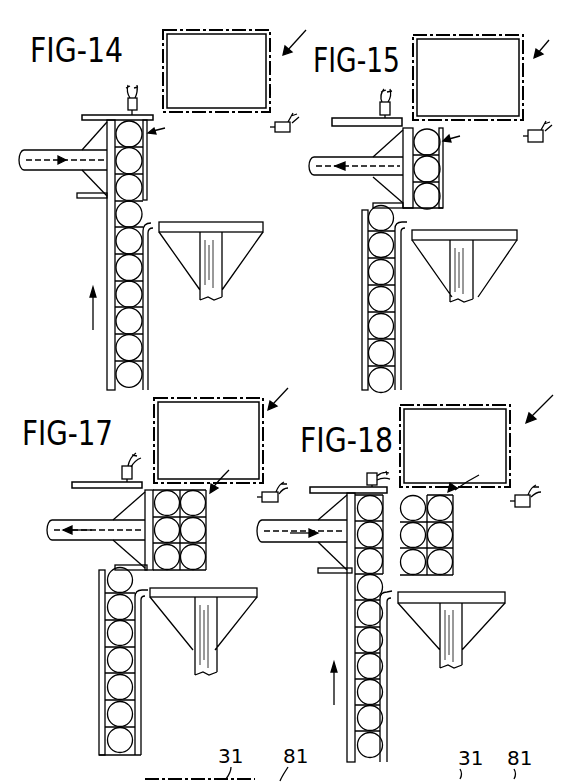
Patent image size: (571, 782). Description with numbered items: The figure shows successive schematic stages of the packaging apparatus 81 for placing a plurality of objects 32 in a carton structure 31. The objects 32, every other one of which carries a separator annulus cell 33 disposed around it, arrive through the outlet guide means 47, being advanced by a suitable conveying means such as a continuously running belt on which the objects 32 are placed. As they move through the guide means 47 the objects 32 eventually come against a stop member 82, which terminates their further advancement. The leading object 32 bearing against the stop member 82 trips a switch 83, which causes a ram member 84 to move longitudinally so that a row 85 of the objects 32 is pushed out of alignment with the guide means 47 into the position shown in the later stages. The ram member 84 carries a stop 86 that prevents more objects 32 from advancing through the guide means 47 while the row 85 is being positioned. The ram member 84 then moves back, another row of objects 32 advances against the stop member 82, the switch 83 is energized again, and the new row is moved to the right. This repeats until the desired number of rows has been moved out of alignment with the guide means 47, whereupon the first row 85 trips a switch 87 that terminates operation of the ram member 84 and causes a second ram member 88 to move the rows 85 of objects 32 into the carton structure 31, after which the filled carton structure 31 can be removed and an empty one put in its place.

In FIG. 14, the carton structure 31 is at (243, 30).
In FIG. 15, the carton structure 31 is at (498, 35).
In FIG. 17, the carton structure 31 is at (217, 398).
In FIG. 18, the carton structure 31 is at (492, 405).
In FIG. 14, the objects 32 is at (133, 163).
In FIG. 15, the objects 32 is at (432, 170).
In FIG. 17, the objects 32 is at (167, 559).
In FIG. 18, the objects 32 is at (442, 539).
In FIG. 14, the separator annulus cell 33 is at (149, 200).
In FIG. 15, the separator annulus cell 33 is at (443, 187).
In FIG. 17, the separator annulus cell 33 is at (206, 524).
In FIG. 18, the separator annulus cell 33 is at (453, 576).
In FIG. 14, the outlet guide means 47 is at (144, 354).
In FIG. 15, the outlet guide means 47 is at (398, 357).
In FIG. 17, the outlet guide means 47 is at (138, 725).
In FIG. 18, the outlet guide means 47 is at (385, 728).
In FIG. 14, the packaging apparatus 81 is at (303, 31).
In FIG. 15, the packaging apparatus 81 is at (550, 36).
In FIG. 17, the packaging apparatus 81 is at (282, 392).
In FIG. 18, the packaging apparatus 81 is at (548, 398).
In FIG. 14, the stop member 82 is at (82, 114).
In FIG. 15, the stop member 82 is at (352, 118).
In FIG. 17, the stop member 82 is at (80, 482).
In FIG. 18, the stop member 82 is at (313, 487).
In FIG. 14, the switch 83 is at (137, 101).
In FIG. 15, the switch 83 is at (390, 110).
In FIG. 17, the switch 83 is at (132, 471).
In FIG. 18, the switch 83 is at (367, 480).
In FIG. 14, the ram member 84 is at (40, 150).
In FIG. 15, the ram member 84 is at (336, 161).
In FIG. 17, the ram member 84 is at (83, 525).
In FIG. 18, the ram member 84 is at (294, 527).
In FIG. 14, the row 85 is at (169, 131).
In FIG. 15, the row 85 is at (463, 139).
In FIG. 17, the row 85 is at (228, 471).
In FIG. 18, the row 85 is at (473, 473).
In FIG. 14, the stop 86 is at (82, 199).
In FIG. 15, the stop 86 is at (373, 205).
In FIG. 17, the stop 86 is at (112, 566).
In FIG. 18, the stop 86 is at (318, 569).
In FIG. 14, the switch 87 is at (284, 137).
In FIG. 15, the switch 87 is at (530, 143).
In FIG. 17, the switch 87 is at (275, 490).
In FIG. 18, the switch 87 is at (525, 495).
In FIG. 14, the second ram member 88 is at (224, 290).
In FIG. 15, the second ram member 88 is at (473, 294).
In FIG. 17, the second ram member 88 is at (217, 653).
In FIG. 18, the second ram member 88 is at (462, 656).